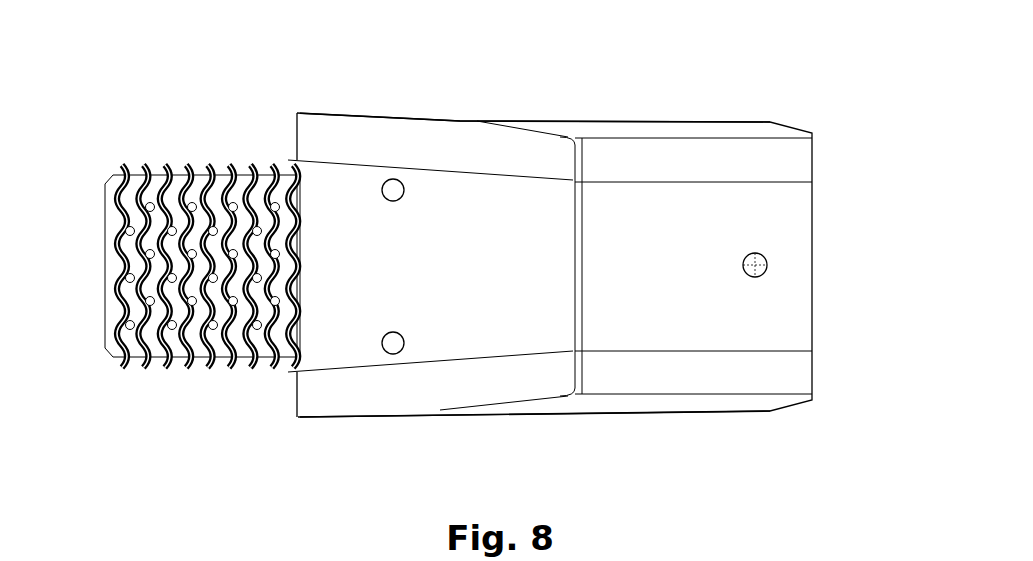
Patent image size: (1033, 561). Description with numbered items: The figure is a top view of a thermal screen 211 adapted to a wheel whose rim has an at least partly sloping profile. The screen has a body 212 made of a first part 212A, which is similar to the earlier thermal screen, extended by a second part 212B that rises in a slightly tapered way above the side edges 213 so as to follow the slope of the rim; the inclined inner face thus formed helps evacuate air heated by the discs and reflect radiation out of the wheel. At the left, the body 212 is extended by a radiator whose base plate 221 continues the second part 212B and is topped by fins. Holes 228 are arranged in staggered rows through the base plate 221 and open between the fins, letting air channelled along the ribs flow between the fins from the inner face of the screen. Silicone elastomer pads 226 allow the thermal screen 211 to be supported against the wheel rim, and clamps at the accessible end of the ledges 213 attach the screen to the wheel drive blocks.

The thermal screen 211 is at (466, 299).
The body 212 is at (597, 266).
The first part 212A is at (793, 208).
The second part 212B is at (347, 173).
The side edges 213 is at (670, 130).
The base plate 221 is at (162, 244).
The silicone elastomer pads 226 is at (393, 185).
The holes 228 is at (150, 202).